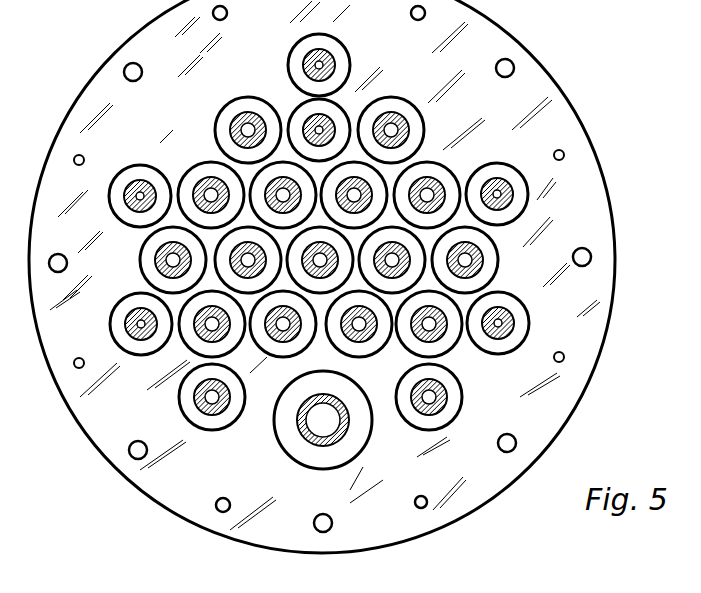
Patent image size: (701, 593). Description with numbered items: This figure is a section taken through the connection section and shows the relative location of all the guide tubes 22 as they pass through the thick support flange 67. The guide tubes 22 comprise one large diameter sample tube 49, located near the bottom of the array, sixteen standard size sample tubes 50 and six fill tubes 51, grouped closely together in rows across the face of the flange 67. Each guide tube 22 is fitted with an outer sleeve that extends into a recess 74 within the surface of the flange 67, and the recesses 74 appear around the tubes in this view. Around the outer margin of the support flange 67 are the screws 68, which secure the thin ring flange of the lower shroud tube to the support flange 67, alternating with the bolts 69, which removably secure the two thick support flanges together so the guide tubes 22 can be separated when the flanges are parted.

The guide tubes 22 is at (502, 118).
The large diameter sample tube 49 is at (312, 430).
The standard size sample tubes 50 is at (210, 195).
The fill tubes 51 is at (318, 128).
The thick support flange 67 is at (473, 509).
The screws 68 is at (84, 156).
The bolts 69 is at (57, 254).
The recesses 74 is at (380, 102).